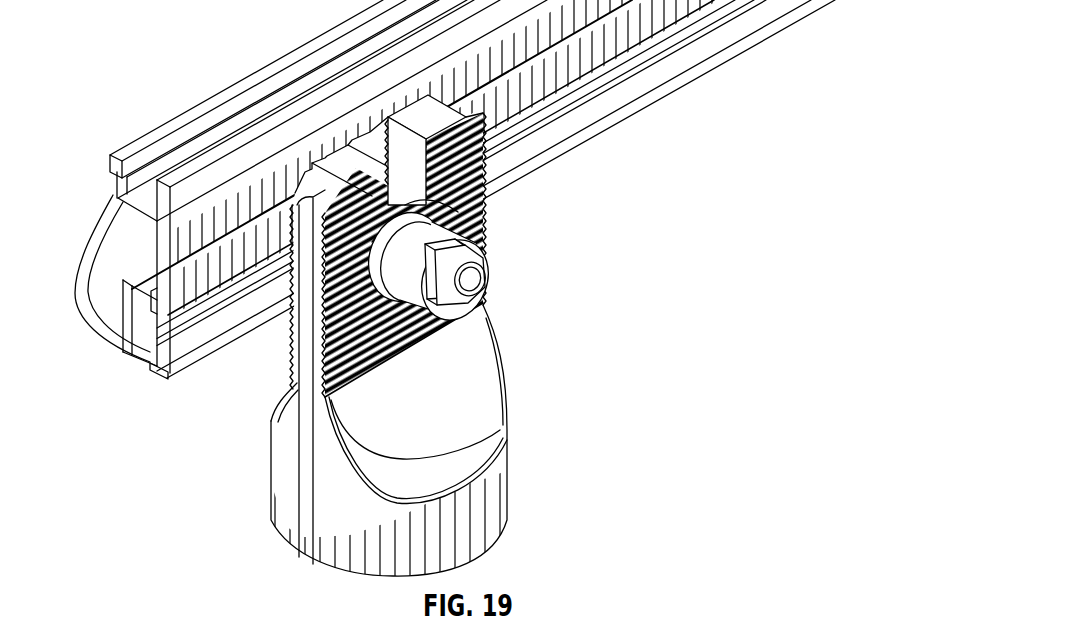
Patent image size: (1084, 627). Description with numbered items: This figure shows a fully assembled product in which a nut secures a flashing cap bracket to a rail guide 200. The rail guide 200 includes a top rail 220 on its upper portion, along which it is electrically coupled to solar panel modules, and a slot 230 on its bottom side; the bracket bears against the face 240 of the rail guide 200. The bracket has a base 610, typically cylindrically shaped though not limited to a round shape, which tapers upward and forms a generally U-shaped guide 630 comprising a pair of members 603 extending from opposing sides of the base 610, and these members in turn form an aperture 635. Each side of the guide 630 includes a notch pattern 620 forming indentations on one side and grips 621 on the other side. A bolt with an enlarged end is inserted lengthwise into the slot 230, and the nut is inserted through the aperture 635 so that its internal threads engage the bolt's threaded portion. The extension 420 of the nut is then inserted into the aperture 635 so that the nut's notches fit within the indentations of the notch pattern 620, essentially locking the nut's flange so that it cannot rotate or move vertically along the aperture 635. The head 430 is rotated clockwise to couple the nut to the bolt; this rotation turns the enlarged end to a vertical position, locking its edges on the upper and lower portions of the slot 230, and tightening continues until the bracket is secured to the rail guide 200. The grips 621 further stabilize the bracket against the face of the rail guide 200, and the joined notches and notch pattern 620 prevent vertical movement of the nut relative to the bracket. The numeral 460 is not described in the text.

The rail guide 200 is at (85, 244).
The top rail 220 is at (116, 163).
The slot 230 is at (115, 347).
The face 240 is at (164, 372).
The extension 420 is at (480, 243).
The head 430 is at (488, 285).
The bolt 460 is at (423, 240).
The members 603 is at (298, 355).
The base 610 is at (507, 482).
The notch pattern 620 is at (485, 208).
The grips 621 is at (296, 372).
The U-shaped guide 630 is at (413, 142).
The aperture 635 is at (413, 168).